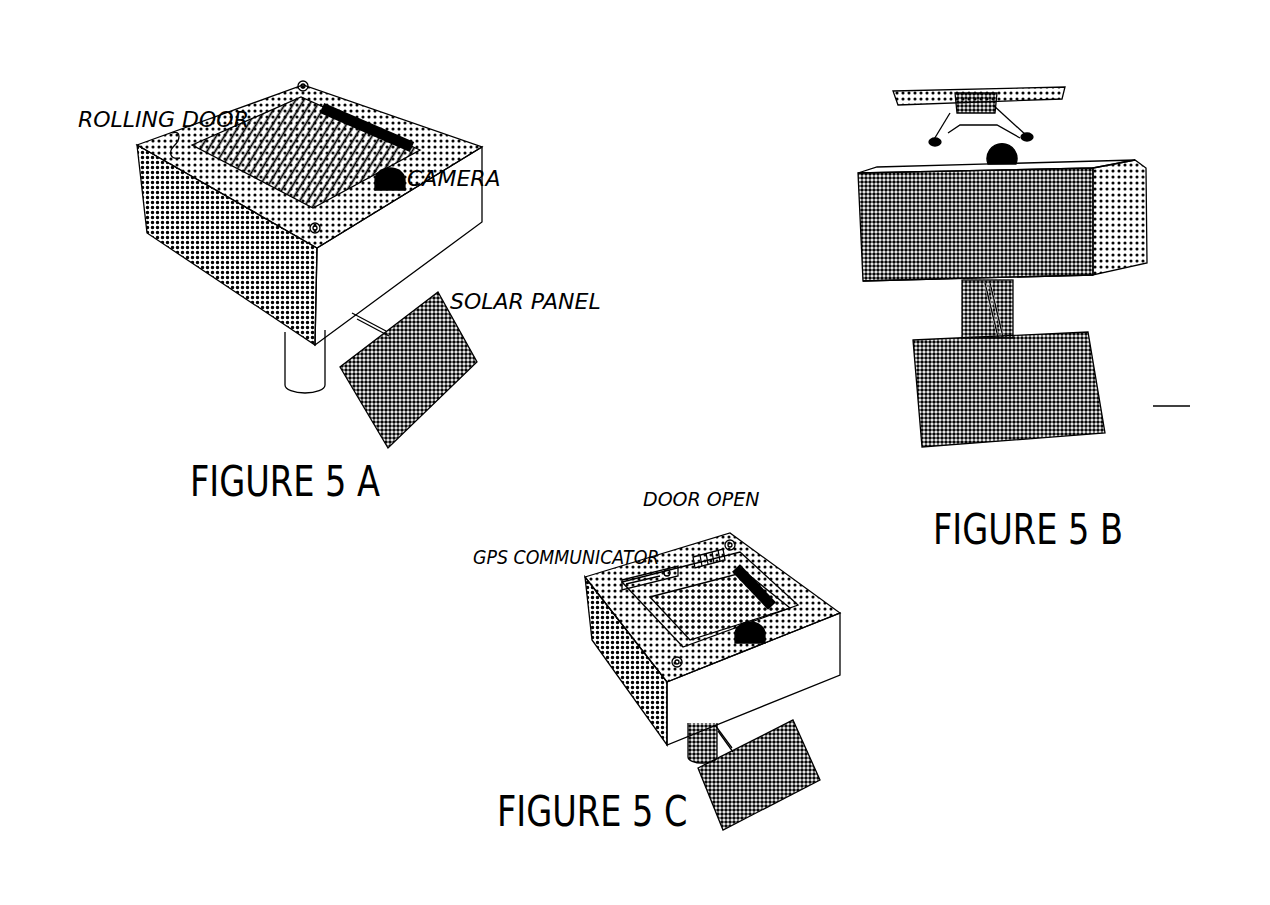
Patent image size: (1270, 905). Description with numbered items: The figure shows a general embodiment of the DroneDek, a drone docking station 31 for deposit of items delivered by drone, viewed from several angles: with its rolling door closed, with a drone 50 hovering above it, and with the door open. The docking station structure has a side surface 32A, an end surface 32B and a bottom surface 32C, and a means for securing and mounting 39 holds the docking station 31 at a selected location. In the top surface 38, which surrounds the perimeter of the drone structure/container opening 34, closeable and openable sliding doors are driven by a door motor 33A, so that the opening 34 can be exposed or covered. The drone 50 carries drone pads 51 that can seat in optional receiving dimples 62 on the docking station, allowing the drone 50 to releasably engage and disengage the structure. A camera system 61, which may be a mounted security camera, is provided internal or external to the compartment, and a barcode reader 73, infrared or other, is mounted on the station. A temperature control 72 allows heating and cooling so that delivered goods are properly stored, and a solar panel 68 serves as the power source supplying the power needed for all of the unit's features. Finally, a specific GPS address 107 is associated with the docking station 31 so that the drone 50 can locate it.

In FIG. 5A, the drone docking station 31 is at (297, 226).
In FIG. 5B, the drone docking station 31 is at (985, 286).
In FIG. 5C, the drone docking station 31 is at (676, 662).
In FIG. 5B, the side surface 32A is at (1122, 223).
In FIG. 5C, the side surface 32A is at (655, 677).
In FIG. 5B, the end surface 32B is at (887, 235).
In FIG. 5C, the end surface 32B is at (815, 668).
In FIG. 5B, the bottom surface 32C is at (1036, 288).
In FIG. 5A, the door motor 33A is at (373, 123).
In FIG. 5C, the door motor 33A is at (760, 582).
In FIG. 5A, the drone structure/container opening 34 is at (307, 152).
In FIG. 5C, the drone structure/container opening 34 is at (690, 627).
In FIG. 5A, the top surface 38 is at (173, 150).
In FIG. 5A, the means for securing and mounting 39 is at (302, 370).
In FIG. 5B, the means for securing and mounting 39 is at (963, 300).
In FIG. 5B, the drone 50 is at (920, 121).
In FIG. 5B, the drone pads 51 is at (929, 142).
In FIG. 5A, the camera system 61 is at (410, 173).
In FIG. 5B, the camera system 61 is at (1020, 152).
In FIG. 5C, the camera system 61 is at (760, 627).
In FIG. 5A, the receiving dimples 62 is at (307, 82).
In FIG. 5C, the receiving dimples 62 is at (737, 543).
In FIG. 5A, the solar panel 68 is at (425, 378).
In FIG. 5B, the solar panel 68 is at (968, 397).
In FIG. 5C, the solar panel 68 is at (788, 765).
In FIG. 5C, the temperature control 72 is at (727, 556).
In FIG. 5C, the barcode reader 73 is at (655, 578).
In FIG. 5B, the GPS address 107 is at (1171, 396).